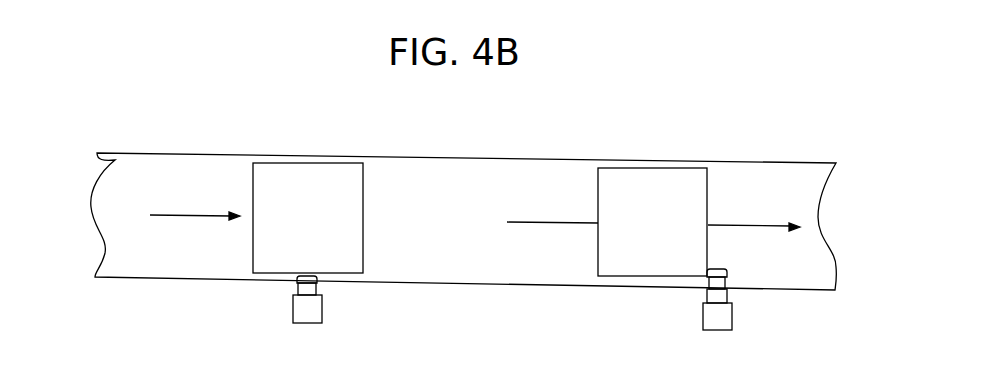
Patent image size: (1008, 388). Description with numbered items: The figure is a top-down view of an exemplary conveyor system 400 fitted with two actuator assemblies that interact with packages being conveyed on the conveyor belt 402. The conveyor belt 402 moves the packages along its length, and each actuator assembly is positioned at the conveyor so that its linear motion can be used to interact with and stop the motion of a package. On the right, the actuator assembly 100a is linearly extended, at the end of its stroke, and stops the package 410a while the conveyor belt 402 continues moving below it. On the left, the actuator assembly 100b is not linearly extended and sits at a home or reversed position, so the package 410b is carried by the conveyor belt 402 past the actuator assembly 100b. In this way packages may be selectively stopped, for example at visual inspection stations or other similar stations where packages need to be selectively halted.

The conveyor system 400 is at (796, 119).
The conveyor belt 402 is at (313, 153).
The package 410a is at (652, 222).
The package 410b is at (308, 218).
The actuator assembly 100a is at (741, 344).
The actuator assembly 100b is at (333, 341).